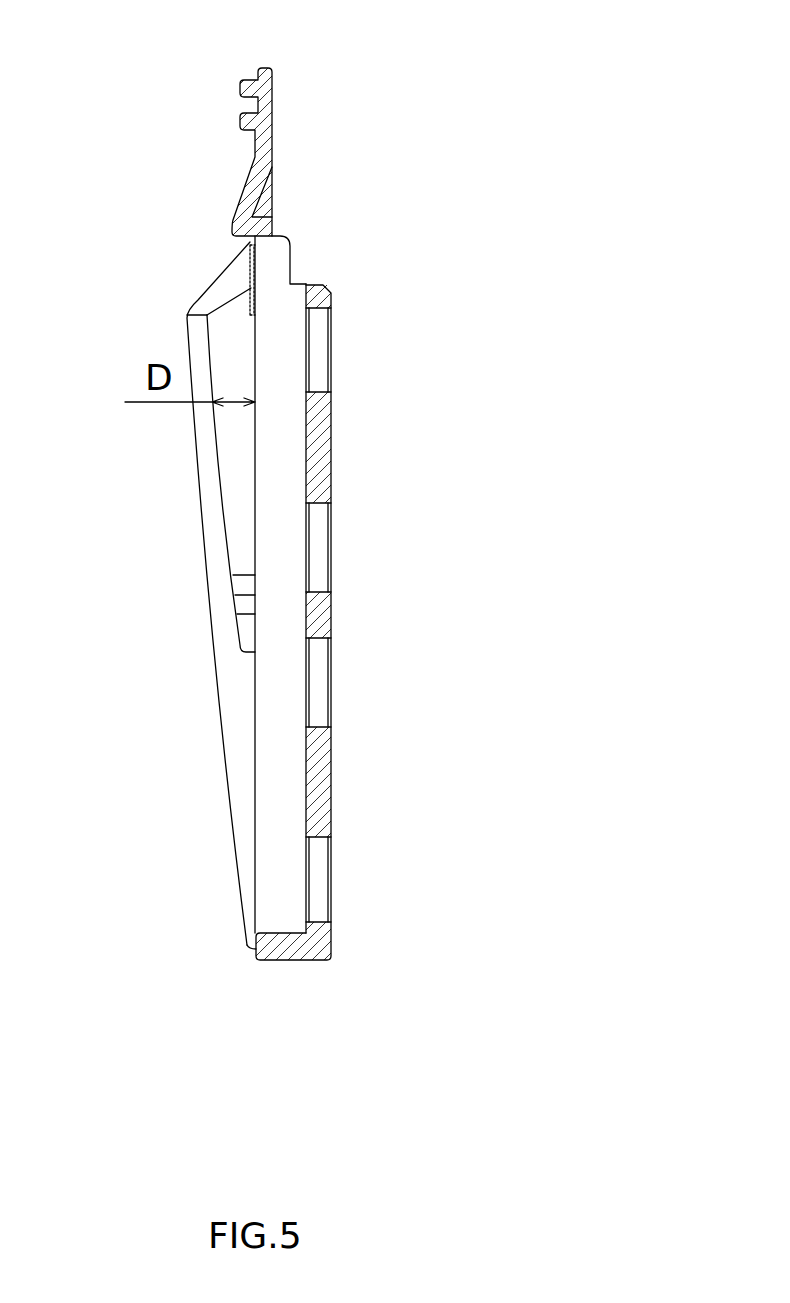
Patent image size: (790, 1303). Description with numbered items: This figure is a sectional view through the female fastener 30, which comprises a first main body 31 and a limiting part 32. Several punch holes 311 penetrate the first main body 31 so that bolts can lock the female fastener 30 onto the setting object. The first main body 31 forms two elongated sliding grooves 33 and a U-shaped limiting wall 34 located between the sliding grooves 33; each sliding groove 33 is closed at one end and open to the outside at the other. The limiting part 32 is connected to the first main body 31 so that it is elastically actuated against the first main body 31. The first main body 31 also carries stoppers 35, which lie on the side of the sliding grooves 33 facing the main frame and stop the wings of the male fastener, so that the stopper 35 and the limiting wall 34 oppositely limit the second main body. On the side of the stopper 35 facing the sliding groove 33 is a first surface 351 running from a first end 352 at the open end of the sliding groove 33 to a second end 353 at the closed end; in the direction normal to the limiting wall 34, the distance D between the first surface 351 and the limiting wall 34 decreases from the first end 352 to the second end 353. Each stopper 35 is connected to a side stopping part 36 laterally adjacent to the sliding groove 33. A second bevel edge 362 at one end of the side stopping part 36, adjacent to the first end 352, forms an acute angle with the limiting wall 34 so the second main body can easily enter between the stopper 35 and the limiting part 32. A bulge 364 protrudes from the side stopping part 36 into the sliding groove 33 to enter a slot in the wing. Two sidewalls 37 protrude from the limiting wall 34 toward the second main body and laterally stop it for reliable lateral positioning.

The female fastener 30 is at (357, 135).
The first main body 31 is at (331, 448).
The punch hole 311 is at (318, 683).
The limiting part 32 is at (233, 227).
The sliding groove 33 is at (245, 350).
The limiting wall 34 is at (253, 457).
The stopper 35 is at (212, 477).
The first surface 351 is at (229, 540).
The first end 352 is at (252, 288).
The second end 353 is at (238, 645).
The side stopping part 36 is at (207, 302).
The second bevel edge 362 is at (210, 282).
The bulge 364 is at (243, 605).
The sidewall 37 is at (233, 847).